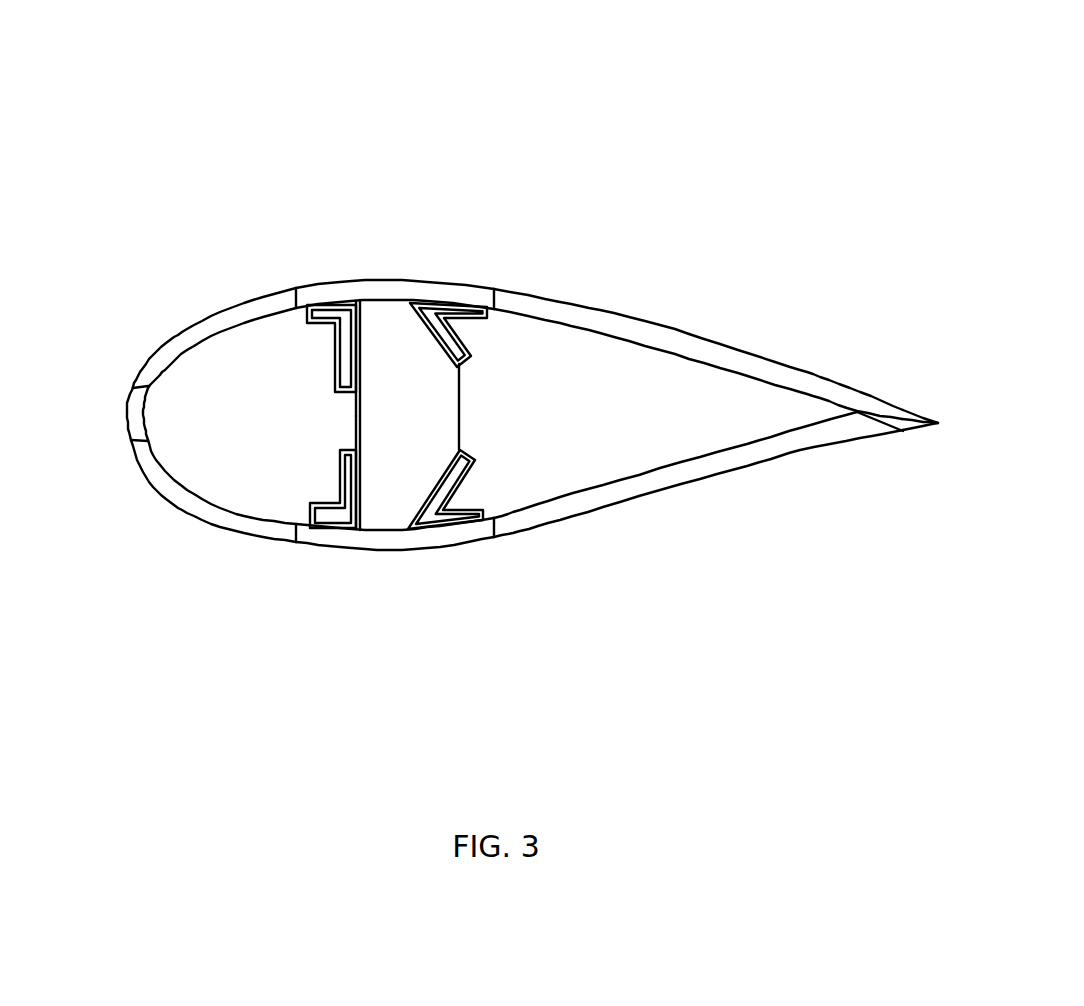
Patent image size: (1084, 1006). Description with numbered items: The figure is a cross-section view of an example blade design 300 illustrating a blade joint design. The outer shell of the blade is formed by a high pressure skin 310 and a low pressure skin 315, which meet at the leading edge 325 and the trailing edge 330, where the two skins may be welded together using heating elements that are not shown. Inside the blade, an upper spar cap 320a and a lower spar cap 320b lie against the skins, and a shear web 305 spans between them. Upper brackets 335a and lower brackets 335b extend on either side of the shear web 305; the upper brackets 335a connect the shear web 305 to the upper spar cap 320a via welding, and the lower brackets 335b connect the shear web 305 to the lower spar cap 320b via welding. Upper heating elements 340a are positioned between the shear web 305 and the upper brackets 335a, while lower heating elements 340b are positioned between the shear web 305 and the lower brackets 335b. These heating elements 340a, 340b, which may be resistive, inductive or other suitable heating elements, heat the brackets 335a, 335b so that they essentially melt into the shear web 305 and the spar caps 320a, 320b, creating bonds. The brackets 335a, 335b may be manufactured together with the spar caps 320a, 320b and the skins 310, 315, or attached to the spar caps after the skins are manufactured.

The blade design 300 is at (562, 82).
The shear web 305 is at (443, 404).
The high pressure skin 310 is at (177, 523).
The low pressure skin 315 is at (648, 301).
The upper spar cap 320a is at (387, 269).
The lower spar cap 320b is at (385, 562).
The leading edge 325 is at (118, 420).
The trailing edge 330 is at (904, 428).
The upper brackets 335a is at (316, 339).
The lower brackets 335b is at (319, 493).
The upper heating elements 340a is at (370, 348).
The lower heating elements 340b is at (370, 485).